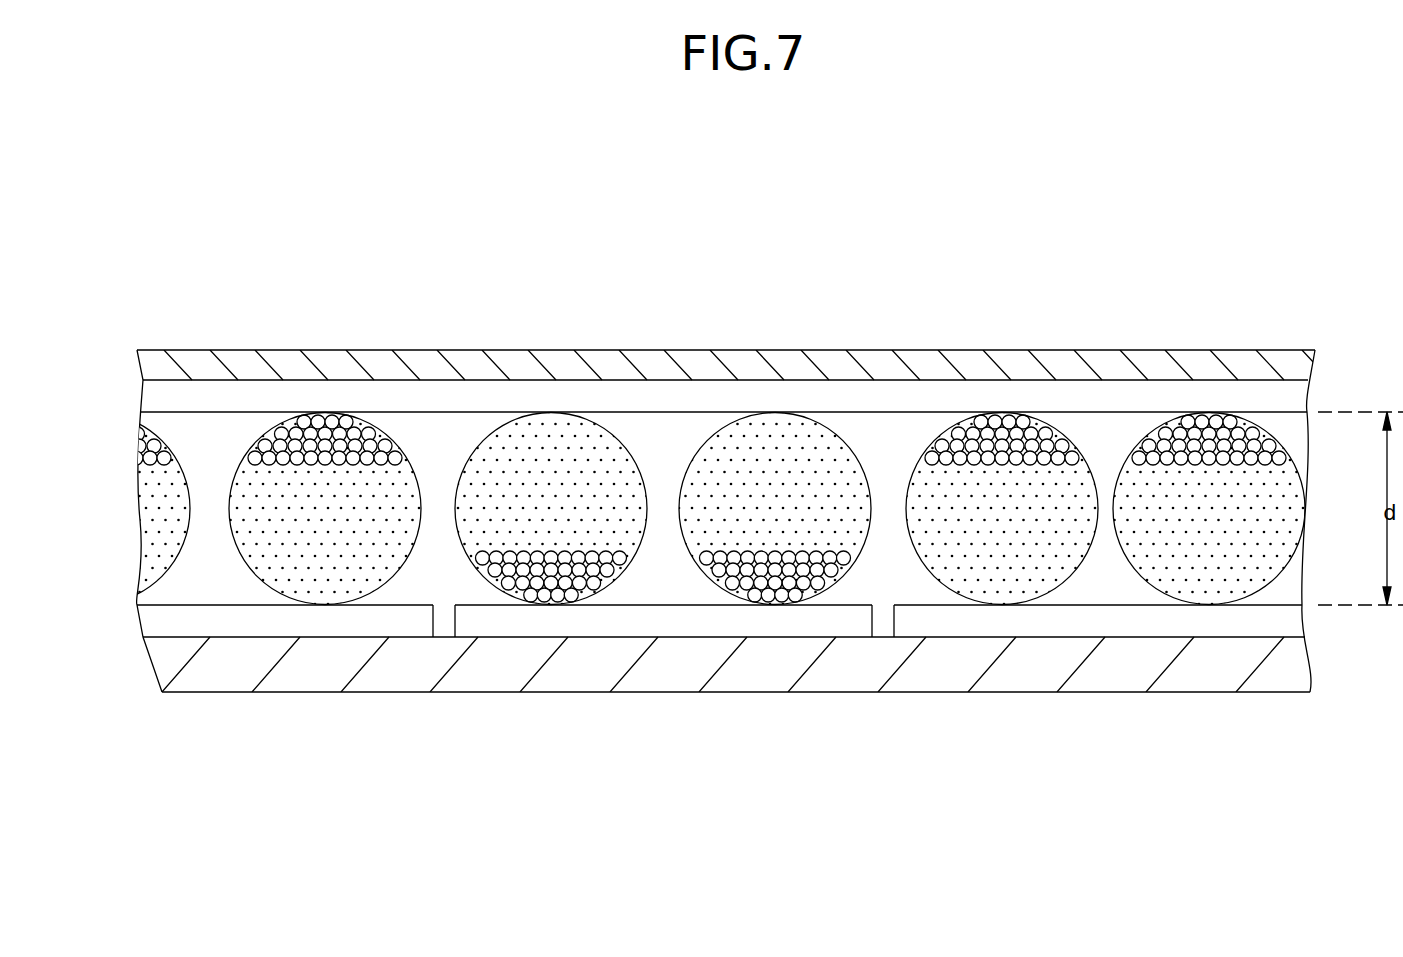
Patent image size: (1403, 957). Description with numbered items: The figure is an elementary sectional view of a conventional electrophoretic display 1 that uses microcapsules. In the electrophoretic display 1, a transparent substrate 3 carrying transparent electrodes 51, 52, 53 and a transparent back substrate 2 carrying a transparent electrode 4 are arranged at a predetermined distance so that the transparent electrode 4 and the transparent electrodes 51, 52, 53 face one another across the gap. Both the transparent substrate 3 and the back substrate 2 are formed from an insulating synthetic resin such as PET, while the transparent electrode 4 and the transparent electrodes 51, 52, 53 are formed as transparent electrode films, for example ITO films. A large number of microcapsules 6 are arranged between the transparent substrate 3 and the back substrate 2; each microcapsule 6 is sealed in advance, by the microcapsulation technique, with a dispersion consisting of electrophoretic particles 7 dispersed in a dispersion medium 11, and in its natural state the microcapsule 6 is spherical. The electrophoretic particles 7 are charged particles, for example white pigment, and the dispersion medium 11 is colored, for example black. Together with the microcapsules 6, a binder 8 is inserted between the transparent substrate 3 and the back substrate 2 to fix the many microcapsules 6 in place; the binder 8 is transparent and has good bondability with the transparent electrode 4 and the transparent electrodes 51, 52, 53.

The electrophoretic display 1 is at (745, 172).
The back substrate 2 is at (239, 360).
The transparent substrate 3 is at (578, 665).
The transparent electrode 4 is at (313, 394).
The transparent electrode 51 is at (1225, 615).
The transparent electrode 52 is at (775, 622).
The transparent electrode 53 is at (250, 622).
The microcapsule 6 is at (717, 430).
The electrophoretic particles 7 is at (573, 560).
The binder 8 is at (683, 606).
The dispersion medium 11 is at (470, 508).